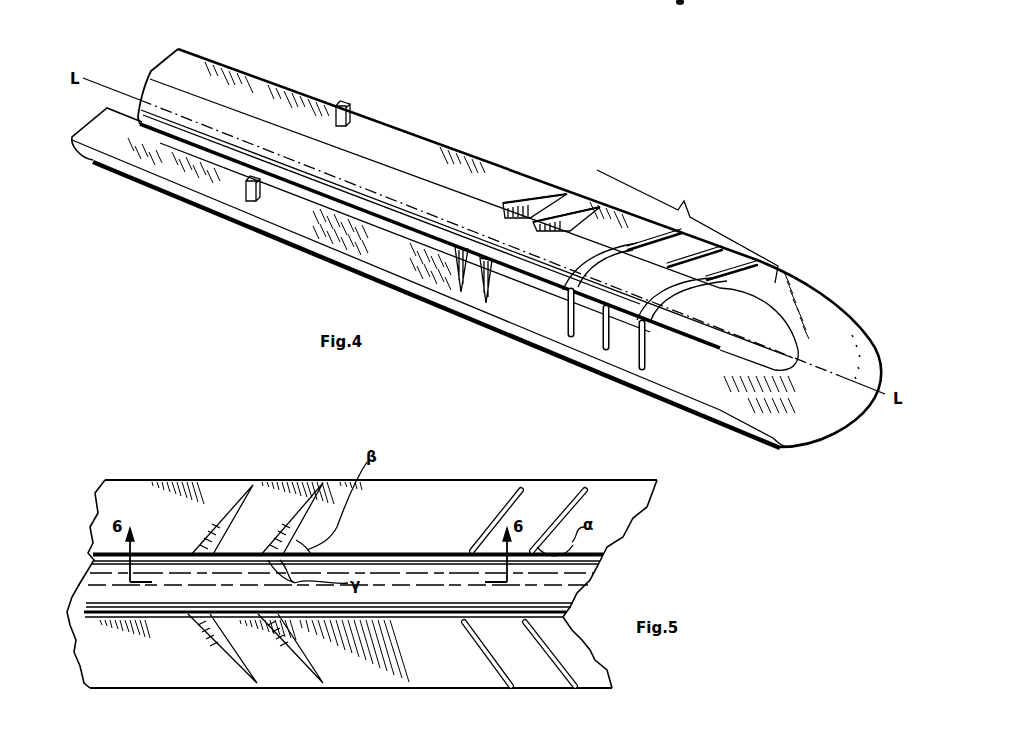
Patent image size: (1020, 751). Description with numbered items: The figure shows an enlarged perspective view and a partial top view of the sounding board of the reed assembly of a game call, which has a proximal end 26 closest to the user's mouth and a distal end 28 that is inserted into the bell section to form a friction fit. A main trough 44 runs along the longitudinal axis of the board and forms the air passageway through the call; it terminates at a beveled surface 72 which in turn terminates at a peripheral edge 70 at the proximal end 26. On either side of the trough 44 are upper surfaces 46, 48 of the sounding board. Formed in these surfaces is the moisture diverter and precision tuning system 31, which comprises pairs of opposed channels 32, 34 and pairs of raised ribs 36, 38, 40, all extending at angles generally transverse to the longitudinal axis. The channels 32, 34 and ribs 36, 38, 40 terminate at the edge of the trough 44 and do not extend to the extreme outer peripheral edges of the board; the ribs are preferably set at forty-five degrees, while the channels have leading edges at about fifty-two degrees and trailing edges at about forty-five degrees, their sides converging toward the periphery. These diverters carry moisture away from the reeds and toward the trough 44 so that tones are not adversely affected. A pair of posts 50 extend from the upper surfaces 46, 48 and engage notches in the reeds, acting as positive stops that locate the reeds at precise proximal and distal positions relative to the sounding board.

In FIG. 4, the proximal end 26 is at (862, 433).
In FIG. 4, the distal end 28 is at (156, 54).
In FIG. 4, the moisture diverter and precision tuning system 31 is at (687, 226).
In FIG. 4, the channel 32 is at (486, 205).
In FIG. 5, the channel 32 is at (222, 545).
In FIG. 4, the channel 34 is at (565, 207).
In FIG. 5, the channel 34 is at (308, 540).
In FIG. 4, the raised rib 36 is at (552, 302).
In FIG. 5, the raised rib 36 is at (508, 490).
In FIG. 4, the raised rib 38 is at (580, 342).
In FIG. 5, the raised rib 38 is at (575, 490).
In FIG. 4, the raised rib 40 is at (620, 352).
In FIG. 4, the main trough 44 is at (362, 186).
In FIG. 5, the main trough 44 is at (434, 593).
In FIG. 4, the top surface 46 is at (404, 158).
In FIG. 5, the top surface 46 is at (444, 520).
In FIG. 4, the top surface 48 is at (389, 246).
In FIG. 5, the top surface 48 is at (426, 665).
In FIG. 4, the post 50 is at (350, 107).
In FIG. 4, the peripheral edge 70 is at (830, 447).
In FIG. 4, the beveled surface 72 is at (816, 406).